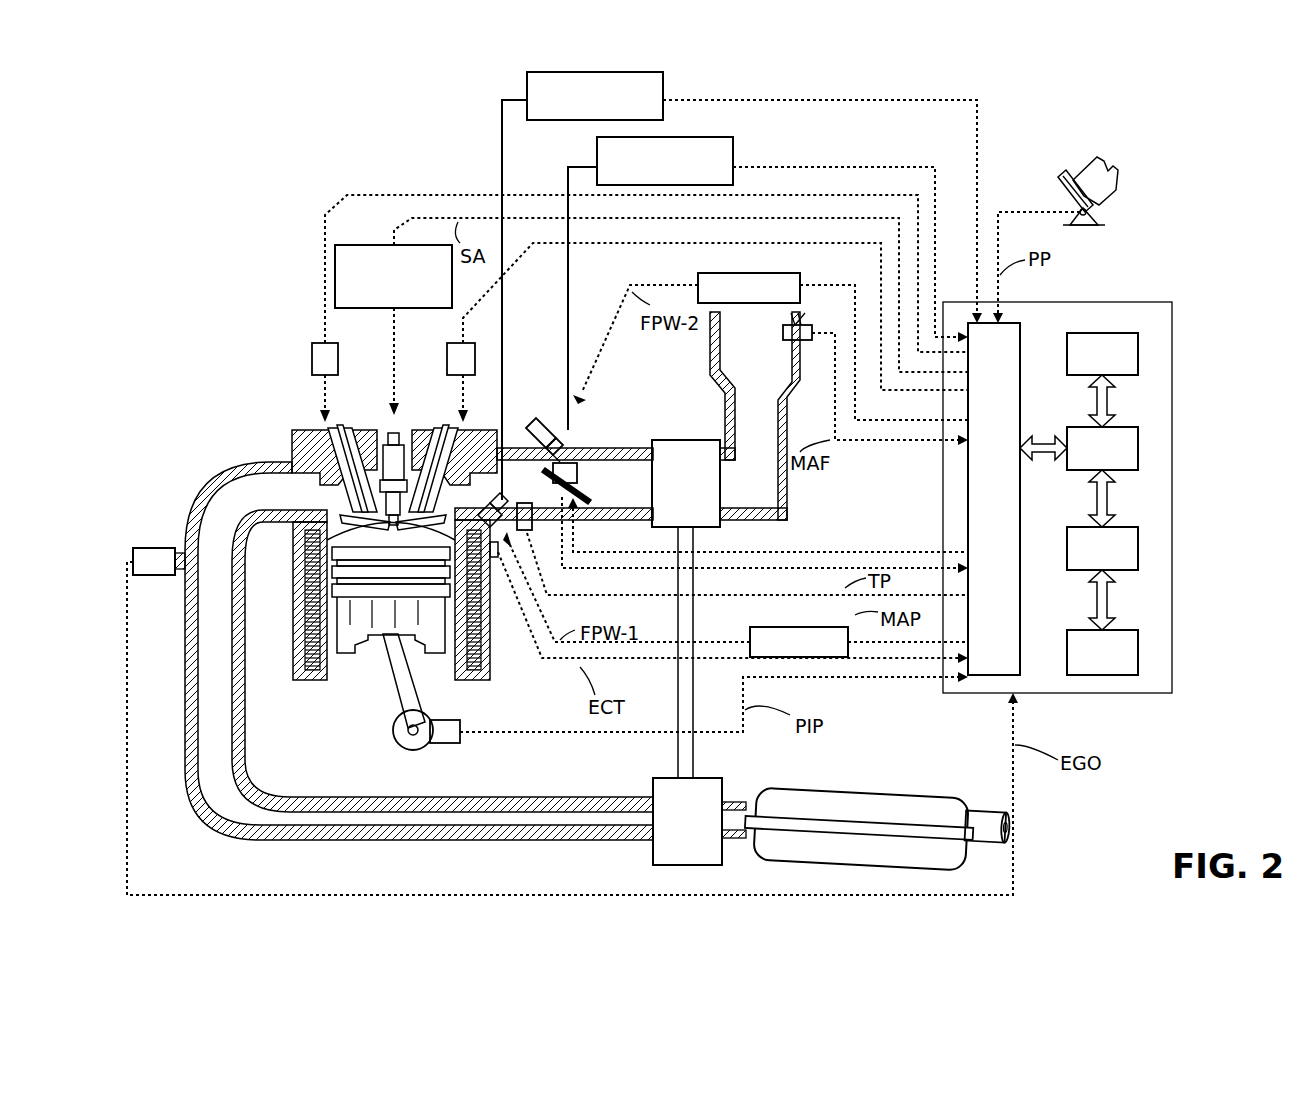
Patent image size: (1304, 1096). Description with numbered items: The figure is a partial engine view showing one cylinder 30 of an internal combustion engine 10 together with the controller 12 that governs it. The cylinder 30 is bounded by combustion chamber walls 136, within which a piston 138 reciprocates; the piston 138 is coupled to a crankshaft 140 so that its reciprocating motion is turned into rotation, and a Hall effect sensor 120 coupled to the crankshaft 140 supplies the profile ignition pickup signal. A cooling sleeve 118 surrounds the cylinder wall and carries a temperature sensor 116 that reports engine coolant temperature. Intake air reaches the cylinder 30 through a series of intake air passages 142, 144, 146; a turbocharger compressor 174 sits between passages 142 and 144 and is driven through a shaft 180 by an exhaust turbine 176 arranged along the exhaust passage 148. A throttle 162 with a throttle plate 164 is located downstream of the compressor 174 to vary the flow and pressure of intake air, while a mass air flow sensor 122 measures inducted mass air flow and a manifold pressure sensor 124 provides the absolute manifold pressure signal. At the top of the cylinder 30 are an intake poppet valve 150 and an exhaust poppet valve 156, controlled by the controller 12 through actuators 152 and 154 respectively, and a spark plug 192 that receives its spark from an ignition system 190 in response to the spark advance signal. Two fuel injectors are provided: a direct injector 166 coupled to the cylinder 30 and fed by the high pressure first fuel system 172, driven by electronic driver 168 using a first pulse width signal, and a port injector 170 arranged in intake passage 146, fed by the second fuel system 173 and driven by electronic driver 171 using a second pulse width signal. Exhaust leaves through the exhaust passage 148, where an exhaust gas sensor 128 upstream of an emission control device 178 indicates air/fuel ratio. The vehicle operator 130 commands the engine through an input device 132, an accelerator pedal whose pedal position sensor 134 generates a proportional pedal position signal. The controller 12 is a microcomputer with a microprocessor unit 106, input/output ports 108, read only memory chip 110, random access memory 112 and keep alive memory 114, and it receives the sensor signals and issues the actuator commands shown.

The internal combustion engine 10 is at (222, 382).
The controller 12 is at (1165, 302).
The cylinder 30 is at (298, 555).
The microprocessor unit 106 is at (1140, 448).
The input/output ports 108 is at (1022, 335).
The read only memory chip 110 is at (1140, 352).
The random access memory 112 is at (1140, 548).
The keep alive memory 114 is at (1140, 652).
The temperature sensor 116 is at (500, 560).
The cooling sleeve 118 is at (480, 615).
The Hall effect sensor 120 is at (455, 745).
The mass air flow sensor 122 is at (806, 326).
The manifold pressure sensor 124 is at (527, 532).
The exhaust gas sensor 128 is at (133, 555).
The vehicle operator 130 is at (1112, 178).
The input device 132 is at (1068, 185).
The pedal position sensor 134 is at (1098, 213).
The combustion chamber walls 136 is at (330, 672).
The piston 138 is at (372, 634).
The crankshaft 140 is at (398, 745).
The intake air passage 142 is at (755, 416).
The intake air passage 144 is at (621, 484).
The intake air passage 146 is at (525, 485).
The exhaust passage 148 is at (419, 651).
The intake poppet valve 150 is at (410, 445).
The actuator 152 is at (450, 355).
The actuator 154 is at (312, 355).
The exhaust poppet valve 156 is at (302, 460).
The throttle 162 is at (570, 462).
The throttle plate 164 is at (548, 470).
The fuel injector 166 is at (492, 520).
The electronic driver 168 is at (752, 630).
The fuel injector 170 is at (542, 432).
The electronic driver 171 is at (698, 278).
The fuel system-1 172 is at (630, 72).
The fuel system-2 173 is at (728, 137).
The compressor 174 is at (668, 440).
The exhaust turbine 176 is at (655, 855).
The emission control device 178 is at (925, 800).
The shaft 180 is at (685, 740).
The ignition system 190 is at (350, 245).
The spark plug 192 is at (388, 440).